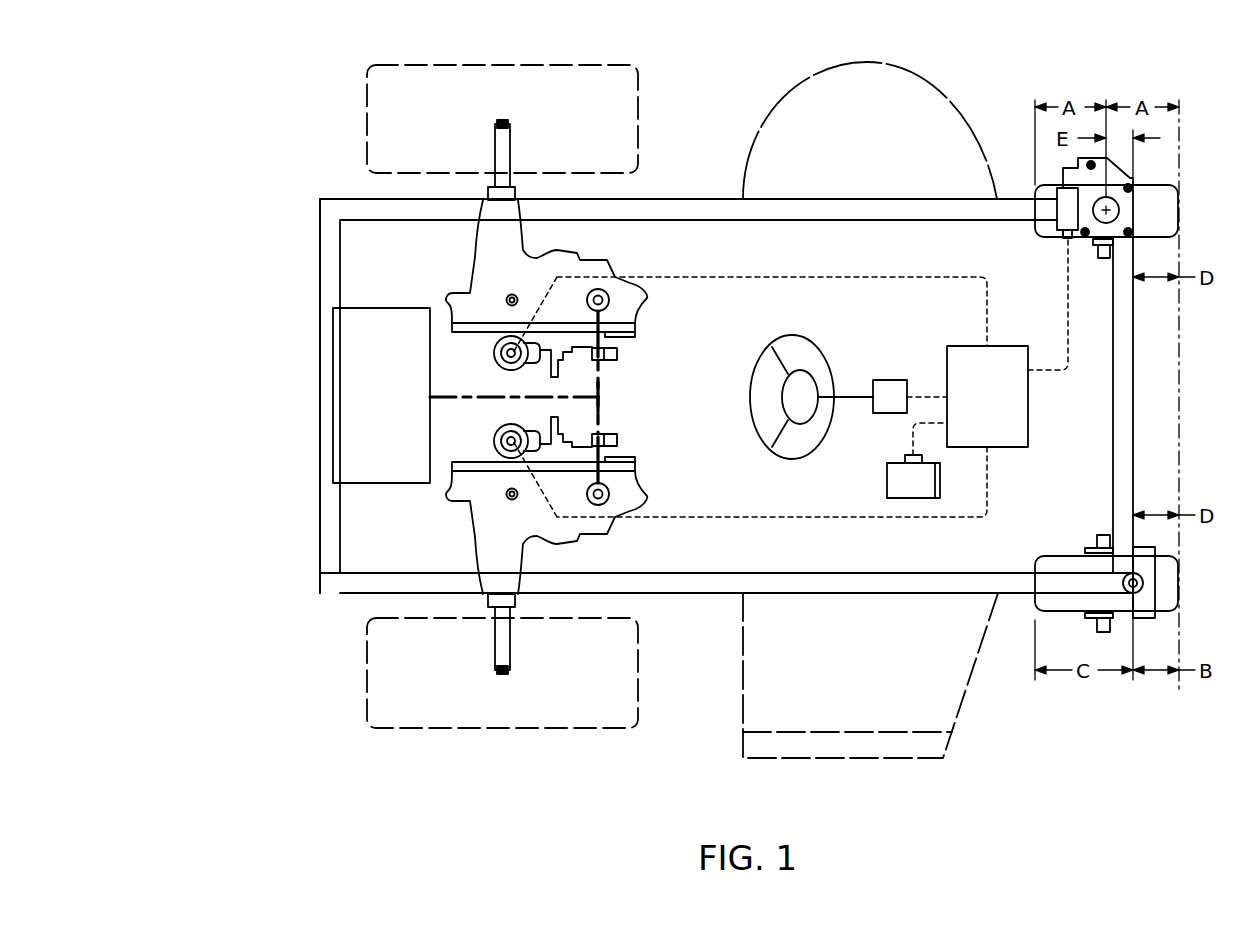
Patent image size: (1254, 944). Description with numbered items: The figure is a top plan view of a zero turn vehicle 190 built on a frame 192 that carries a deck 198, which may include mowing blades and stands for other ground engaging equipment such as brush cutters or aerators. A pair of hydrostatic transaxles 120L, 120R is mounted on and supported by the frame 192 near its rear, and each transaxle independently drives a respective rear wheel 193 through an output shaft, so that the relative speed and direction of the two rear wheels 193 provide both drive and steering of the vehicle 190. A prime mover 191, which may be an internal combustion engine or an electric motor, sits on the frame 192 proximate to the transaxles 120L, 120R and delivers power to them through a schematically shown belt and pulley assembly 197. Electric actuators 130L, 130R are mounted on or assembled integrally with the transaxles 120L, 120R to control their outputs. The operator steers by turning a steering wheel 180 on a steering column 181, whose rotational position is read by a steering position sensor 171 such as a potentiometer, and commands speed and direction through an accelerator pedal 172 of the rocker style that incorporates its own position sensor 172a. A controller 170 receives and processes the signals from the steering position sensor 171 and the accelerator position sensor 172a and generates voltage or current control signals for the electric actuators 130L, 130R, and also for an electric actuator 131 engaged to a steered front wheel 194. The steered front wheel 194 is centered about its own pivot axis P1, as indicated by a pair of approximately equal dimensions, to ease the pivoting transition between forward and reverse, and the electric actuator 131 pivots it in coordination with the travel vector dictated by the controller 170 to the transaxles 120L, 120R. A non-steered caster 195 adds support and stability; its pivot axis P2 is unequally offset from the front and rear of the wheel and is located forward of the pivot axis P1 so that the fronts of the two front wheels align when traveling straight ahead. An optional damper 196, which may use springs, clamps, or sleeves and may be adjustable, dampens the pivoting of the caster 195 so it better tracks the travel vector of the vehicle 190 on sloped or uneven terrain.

The zero turn vehicle 190 is at (233, 106).
The frame 192 is at (712, 199).
The deck 198 is at (867, 62).
The rear wheels 193 is at (557, 65).
The left transaxle 120L is at (478, 254).
The right transaxle 120R is at (478, 541).
The left electric actuator 130L is at (496, 348).
The right electric actuator 130R is at (496, 446).
The belt and pulley assembly 197 is at (430, 397).
The prime mover 191 is at (402, 463).
The steering wheel 180 is at (792, 335).
The steering column 181 is at (853, 393).
The steering position sensor 171 is at (892, 380).
The controller 170 is at (1010, 410).
The accelerator pedal 172 is at (895, 470).
The accelerator position sensor 172a is at (908, 455).
The steered front wheel 194 is at (1178, 215).
The electric actuator 131 is at (1088, 240).
The pivot axis P1 is at (1108, 210).
The caster 195 is at (1178, 578).
The damper 196 is at (1142, 584).
The pivot axis P2 is at (1133, 580).